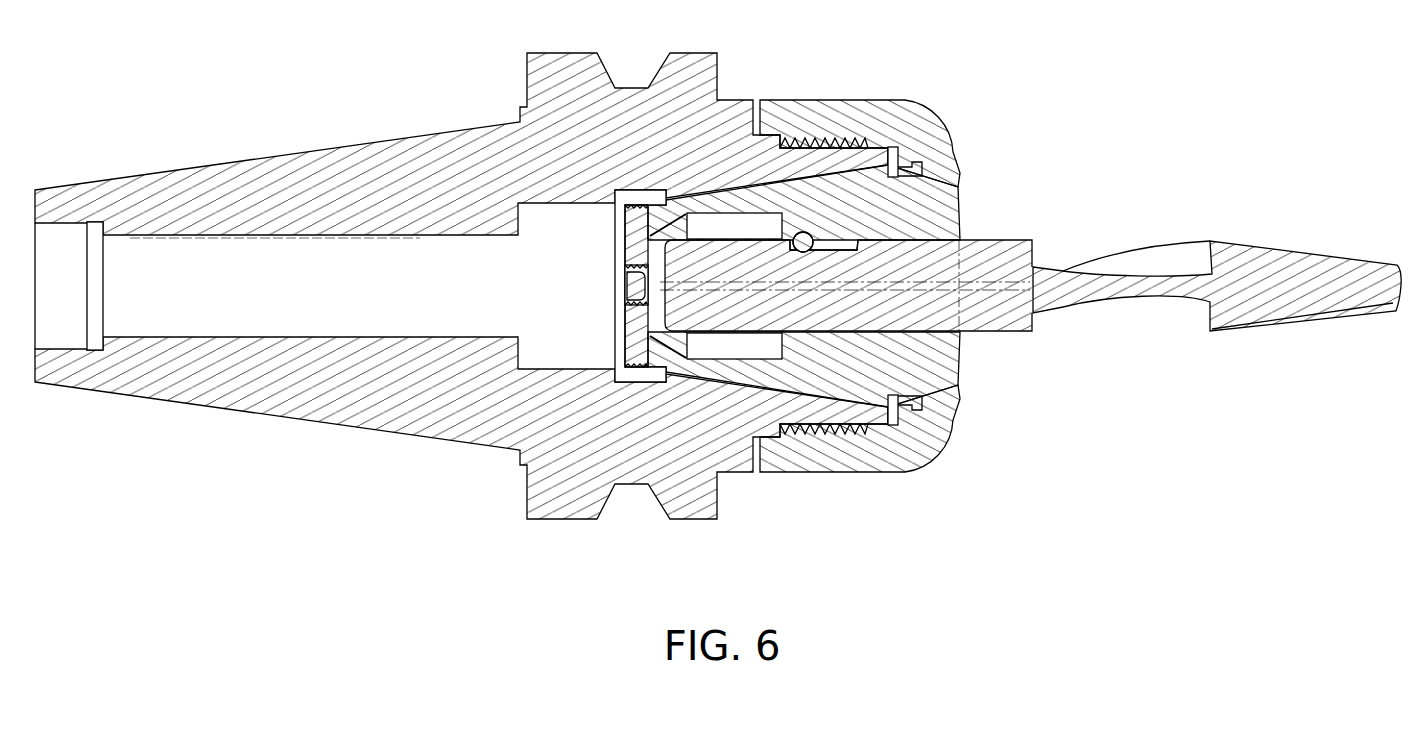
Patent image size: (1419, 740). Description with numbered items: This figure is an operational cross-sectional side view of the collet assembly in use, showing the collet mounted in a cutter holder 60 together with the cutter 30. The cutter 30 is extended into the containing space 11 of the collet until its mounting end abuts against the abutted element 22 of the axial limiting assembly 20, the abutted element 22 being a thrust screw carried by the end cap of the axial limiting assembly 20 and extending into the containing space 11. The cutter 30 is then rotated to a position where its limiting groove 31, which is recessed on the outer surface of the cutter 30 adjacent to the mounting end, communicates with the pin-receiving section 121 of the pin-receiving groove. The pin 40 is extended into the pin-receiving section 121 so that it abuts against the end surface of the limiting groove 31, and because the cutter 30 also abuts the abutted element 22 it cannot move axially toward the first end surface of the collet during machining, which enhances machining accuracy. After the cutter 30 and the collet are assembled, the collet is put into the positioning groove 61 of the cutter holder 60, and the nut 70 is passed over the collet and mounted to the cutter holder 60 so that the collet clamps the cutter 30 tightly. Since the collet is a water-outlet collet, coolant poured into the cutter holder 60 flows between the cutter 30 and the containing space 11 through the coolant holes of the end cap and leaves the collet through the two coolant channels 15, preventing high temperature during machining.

The cutter holder 60 is at (305, 142).
The positioning groove 61 is at (752, 385).
The nut 70 is at (918, 92).
The containing space 11 is at (937, 243).
The pin-receiving section 121 is at (782, 248).
The pin 40 is at (815, 237).
The limiting groove 31 is at (835, 250).
The coolant channels 15 is at (782, 287).
The axial limiting assembly 20 is at (615, 245).
The abutted element 22 is at (630, 286).
The cutter 30 is at (1243, 225).